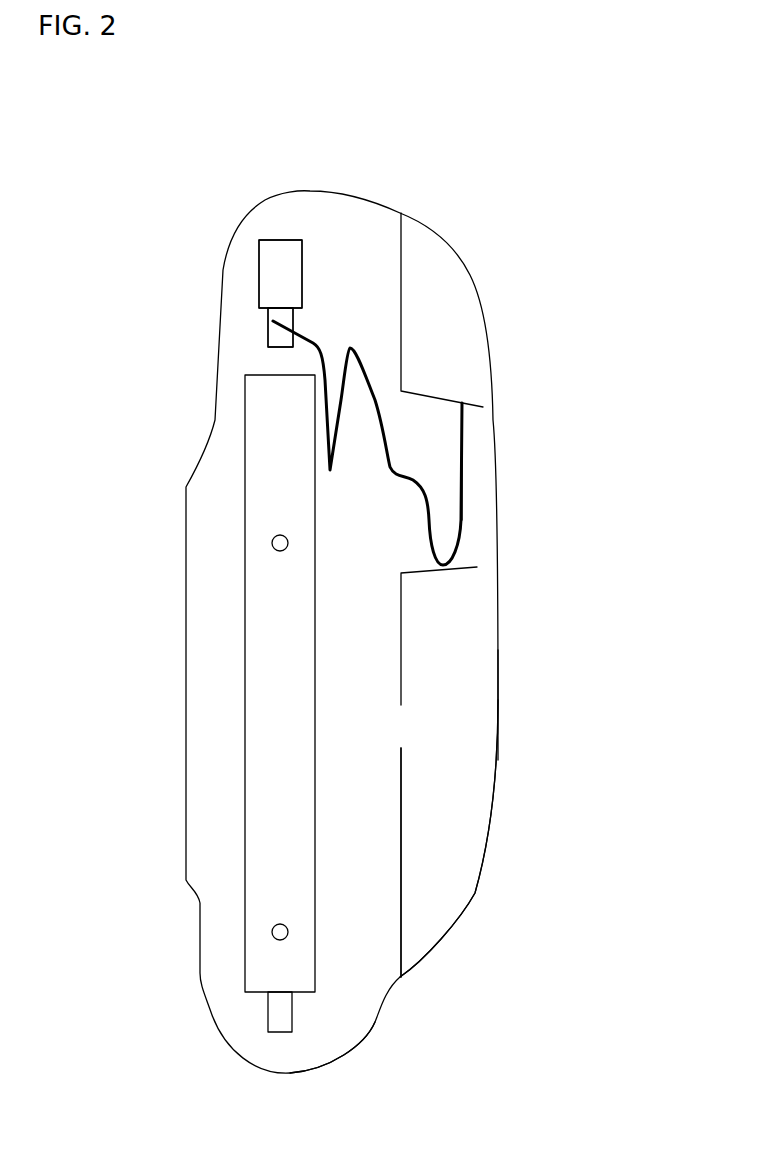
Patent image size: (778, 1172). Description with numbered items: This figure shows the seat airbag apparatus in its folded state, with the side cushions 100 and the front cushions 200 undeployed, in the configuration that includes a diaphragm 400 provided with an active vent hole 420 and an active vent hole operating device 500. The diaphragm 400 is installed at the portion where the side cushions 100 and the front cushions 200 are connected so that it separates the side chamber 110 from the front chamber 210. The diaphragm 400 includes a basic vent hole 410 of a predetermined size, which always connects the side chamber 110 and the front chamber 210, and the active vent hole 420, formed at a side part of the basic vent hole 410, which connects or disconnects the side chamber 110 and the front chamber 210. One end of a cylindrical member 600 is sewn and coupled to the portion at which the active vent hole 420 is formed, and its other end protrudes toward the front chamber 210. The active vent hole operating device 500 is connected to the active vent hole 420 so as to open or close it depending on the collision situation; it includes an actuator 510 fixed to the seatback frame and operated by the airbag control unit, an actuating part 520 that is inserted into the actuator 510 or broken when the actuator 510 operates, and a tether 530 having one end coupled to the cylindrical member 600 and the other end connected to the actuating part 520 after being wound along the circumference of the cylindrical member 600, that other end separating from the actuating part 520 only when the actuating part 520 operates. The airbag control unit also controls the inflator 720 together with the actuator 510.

The side cushion 100 is at (233, 1062).
The side chamber 110 is at (328, 1028).
The front cushion 200 is at (477, 895).
The front chamber 210 is at (471, 763).
The diaphragm 400 is at (401, 643).
The basic vent hole 410 is at (401, 727).
The active vent hole 420 is at (410, 437).
The active vent hole operating device 500 is at (277, 225).
The actuator 510 is at (275, 277).
The actuating part 520 is at (273, 335).
The tether 530 is at (348, 345).
The cylindrical member 600 is at (430, 393).
The inflator 720 is at (263, 748).